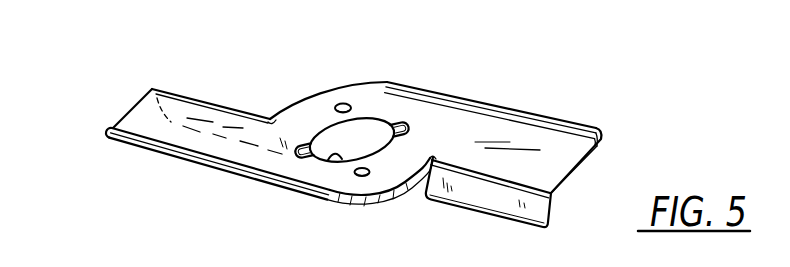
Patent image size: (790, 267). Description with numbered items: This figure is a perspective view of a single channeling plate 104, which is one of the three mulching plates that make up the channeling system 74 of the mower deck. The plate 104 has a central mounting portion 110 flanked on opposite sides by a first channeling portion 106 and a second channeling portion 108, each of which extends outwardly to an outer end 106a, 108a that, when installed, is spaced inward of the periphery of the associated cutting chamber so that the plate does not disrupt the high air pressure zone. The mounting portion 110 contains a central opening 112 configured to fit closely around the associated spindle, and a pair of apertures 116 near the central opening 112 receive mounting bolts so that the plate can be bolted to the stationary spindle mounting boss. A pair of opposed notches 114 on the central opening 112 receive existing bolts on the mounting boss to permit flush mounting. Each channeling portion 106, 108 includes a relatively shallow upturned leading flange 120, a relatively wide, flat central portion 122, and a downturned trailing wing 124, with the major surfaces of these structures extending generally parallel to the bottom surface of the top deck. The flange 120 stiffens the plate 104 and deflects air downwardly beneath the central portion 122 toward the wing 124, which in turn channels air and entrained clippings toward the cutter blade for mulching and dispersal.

The channeling system 74 is at (360, 132).
The channeling plate 104 is at (288, 87).
The first channeling portion 106 is at (144, 99).
The outer end 106a is at (133, 108).
The second channeling portion 108 is at (537, 141).
The outer end 108a is at (600, 150).
The central mounting portion 110 is at (370, 101).
The central opening 112 is at (333, 158).
The notches 114 is at (290, 154).
The apertures 116 is at (343, 104).
The leading flange 120 is at (131, 142).
The central portion 122 is at (128, 122).
The trailing wing 124 is at (492, 200).